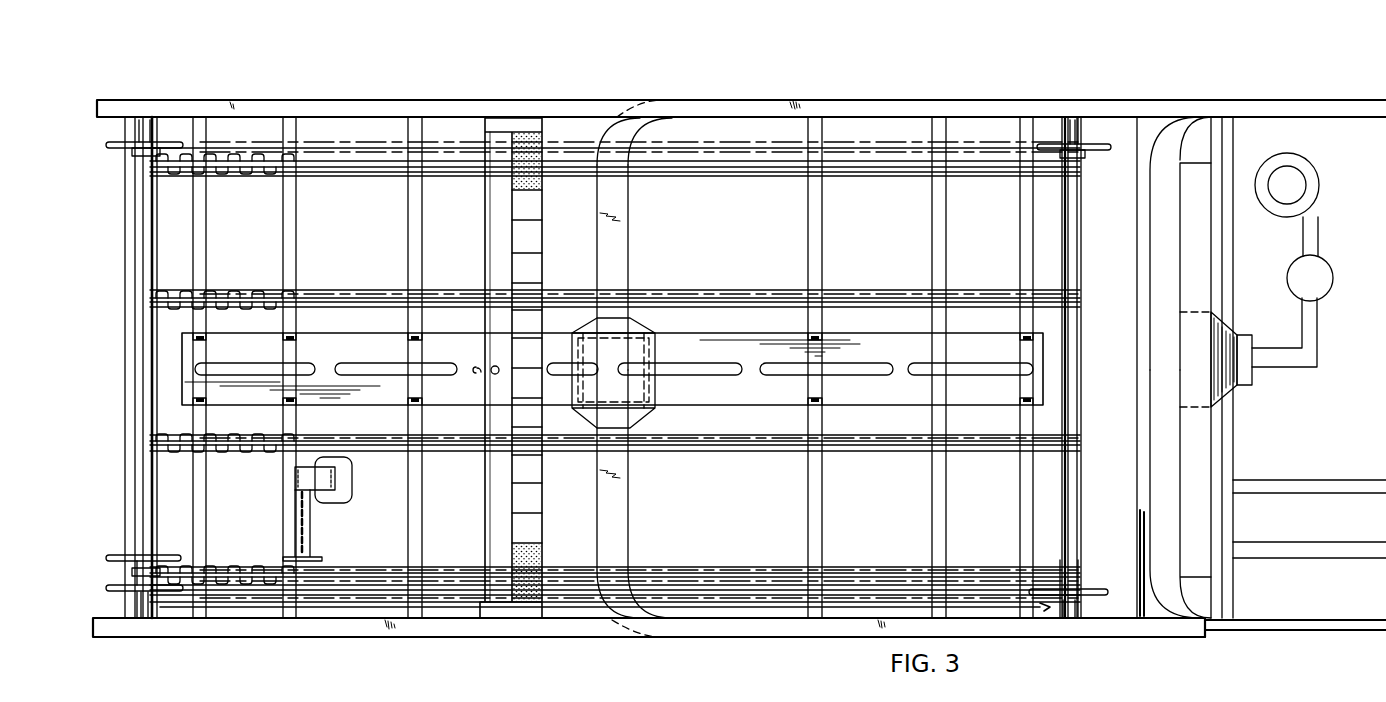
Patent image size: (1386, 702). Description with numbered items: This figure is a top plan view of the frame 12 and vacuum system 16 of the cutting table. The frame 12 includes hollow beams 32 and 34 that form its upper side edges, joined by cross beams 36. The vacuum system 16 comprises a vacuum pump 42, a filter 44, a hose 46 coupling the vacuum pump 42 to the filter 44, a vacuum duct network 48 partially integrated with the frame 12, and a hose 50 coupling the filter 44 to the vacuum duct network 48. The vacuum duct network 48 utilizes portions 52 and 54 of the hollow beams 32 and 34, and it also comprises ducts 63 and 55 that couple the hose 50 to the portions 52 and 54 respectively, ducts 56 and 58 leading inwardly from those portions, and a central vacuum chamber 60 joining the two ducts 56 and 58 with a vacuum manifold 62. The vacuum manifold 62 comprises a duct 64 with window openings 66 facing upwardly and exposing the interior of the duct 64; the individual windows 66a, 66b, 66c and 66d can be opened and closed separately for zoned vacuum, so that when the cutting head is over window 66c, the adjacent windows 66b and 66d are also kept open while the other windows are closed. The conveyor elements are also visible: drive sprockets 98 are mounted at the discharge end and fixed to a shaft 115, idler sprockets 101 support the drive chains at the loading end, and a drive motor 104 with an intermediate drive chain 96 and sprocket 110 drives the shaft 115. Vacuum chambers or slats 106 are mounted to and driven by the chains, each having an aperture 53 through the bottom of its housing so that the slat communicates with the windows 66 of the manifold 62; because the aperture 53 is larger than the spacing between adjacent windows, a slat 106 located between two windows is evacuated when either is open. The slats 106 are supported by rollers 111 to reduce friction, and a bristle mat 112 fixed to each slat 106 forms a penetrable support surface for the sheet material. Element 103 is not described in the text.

The frame 12 is at (478, 92).
The vacuum system 16 is at (1312, 379).
The hollow beam 32 is at (579, 626).
The hollow beam 34 is at (604, 100).
The cross beams 36 is at (296, 205).
The vacuum pump 42 is at (1318, 176).
The filter 44 is at (1333, 280).
The hose 46 is at (1318, 242).
The vacuum duct network 48 is at (656, 334).
The hose 50 is at (1266, 348).
The portion of hollow beam 52 is at (796, 640).
The aperture 53 is at (488, 371).
The portion of hollow beam 54 is at (848, 98).
The duct 55 is at (1181, 236).
The duct 56 is at (615, 498).
The duct 58 is at (618, 207).
The central vacuum chamber 60 is at (650, 406).
The vacuum manifold 62 is at (730, 354).
The duct 63 is at (1180, 480).
The duct 64 is at (863, 395).
The window openings 66 is at (930, 368).
The window 66a is at (262, 364).
The window 66b is at (398, 364).
The window 66c is at (565, 375).
The window 66d is at (715, 372).
The intermediate drive chain 96 is at (213, 566).
The drive sprockets 98 is at (120, 150).
The idler sprockets 101 is at (1094, 152).
The lower beam 103 is at (338, 602).
The drive motor 104 is at (354, 492).
The slats 106 is at (506, 114).
The sprocket 110 is at (168, 556).
The rollers 111 is at (258, 173).
The bristle mat 112 is at (535, 150).
The shaft 115 is at (140, 312).